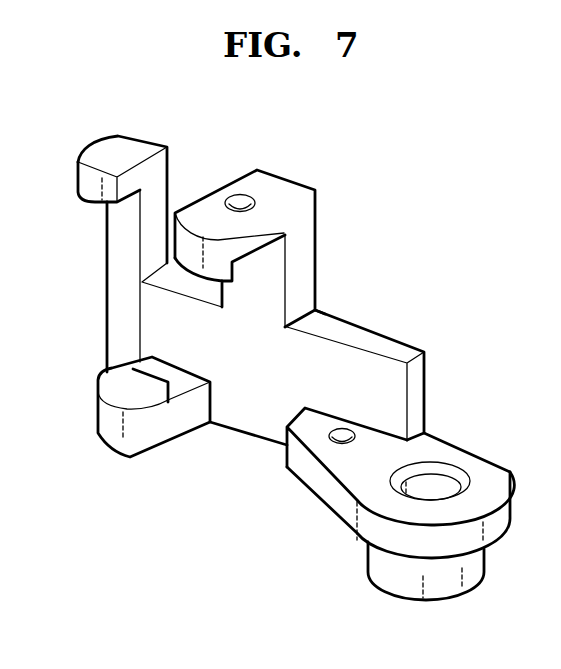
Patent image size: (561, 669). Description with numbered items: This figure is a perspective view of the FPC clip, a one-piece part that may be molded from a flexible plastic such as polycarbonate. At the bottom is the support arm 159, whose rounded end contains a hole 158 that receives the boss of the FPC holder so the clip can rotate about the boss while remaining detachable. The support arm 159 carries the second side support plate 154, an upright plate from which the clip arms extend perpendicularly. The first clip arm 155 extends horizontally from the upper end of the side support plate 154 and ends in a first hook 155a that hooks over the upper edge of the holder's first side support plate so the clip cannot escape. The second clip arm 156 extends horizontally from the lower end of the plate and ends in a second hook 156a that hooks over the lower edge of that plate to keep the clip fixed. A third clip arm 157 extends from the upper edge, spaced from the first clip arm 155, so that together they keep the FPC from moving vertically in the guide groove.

The second side support plate 154 is at (360, 374).
The first clip arm 155 is at (202, 214).
The first hook 155a is at (232, 279).
The second clip arm 156 is at (112, 432).
The second hook 156a is at (162, 388).
The third clip arm 157 is at (93, 162).
The hole 158 is at (437, 487).
The support arm 159 is at (373, 487).